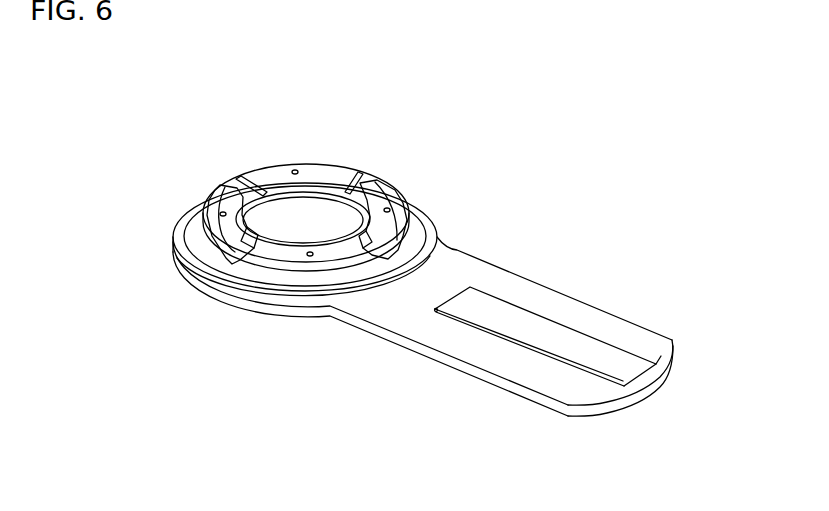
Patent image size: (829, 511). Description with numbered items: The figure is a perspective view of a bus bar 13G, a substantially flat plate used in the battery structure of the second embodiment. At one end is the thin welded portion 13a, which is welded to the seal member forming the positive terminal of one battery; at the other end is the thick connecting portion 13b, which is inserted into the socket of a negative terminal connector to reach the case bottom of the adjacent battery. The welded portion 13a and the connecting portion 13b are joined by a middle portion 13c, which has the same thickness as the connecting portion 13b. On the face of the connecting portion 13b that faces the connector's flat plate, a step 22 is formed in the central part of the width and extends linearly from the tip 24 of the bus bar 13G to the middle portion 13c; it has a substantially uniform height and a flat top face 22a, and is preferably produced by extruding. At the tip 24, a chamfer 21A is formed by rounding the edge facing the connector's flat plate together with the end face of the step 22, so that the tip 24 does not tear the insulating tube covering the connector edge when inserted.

The welded portion 13a is at (323, 175).
The bus bar 13G is at (505, 266).
The connecting portion 13b is at (528, 371).
The middle portion 13c is at (423, 295).
The step 22 is at (616, 344).
The flat top face 22a is at (562, 338).
The chamfer 21A is at (643, 378).
The tip 24 is at (593, 413).